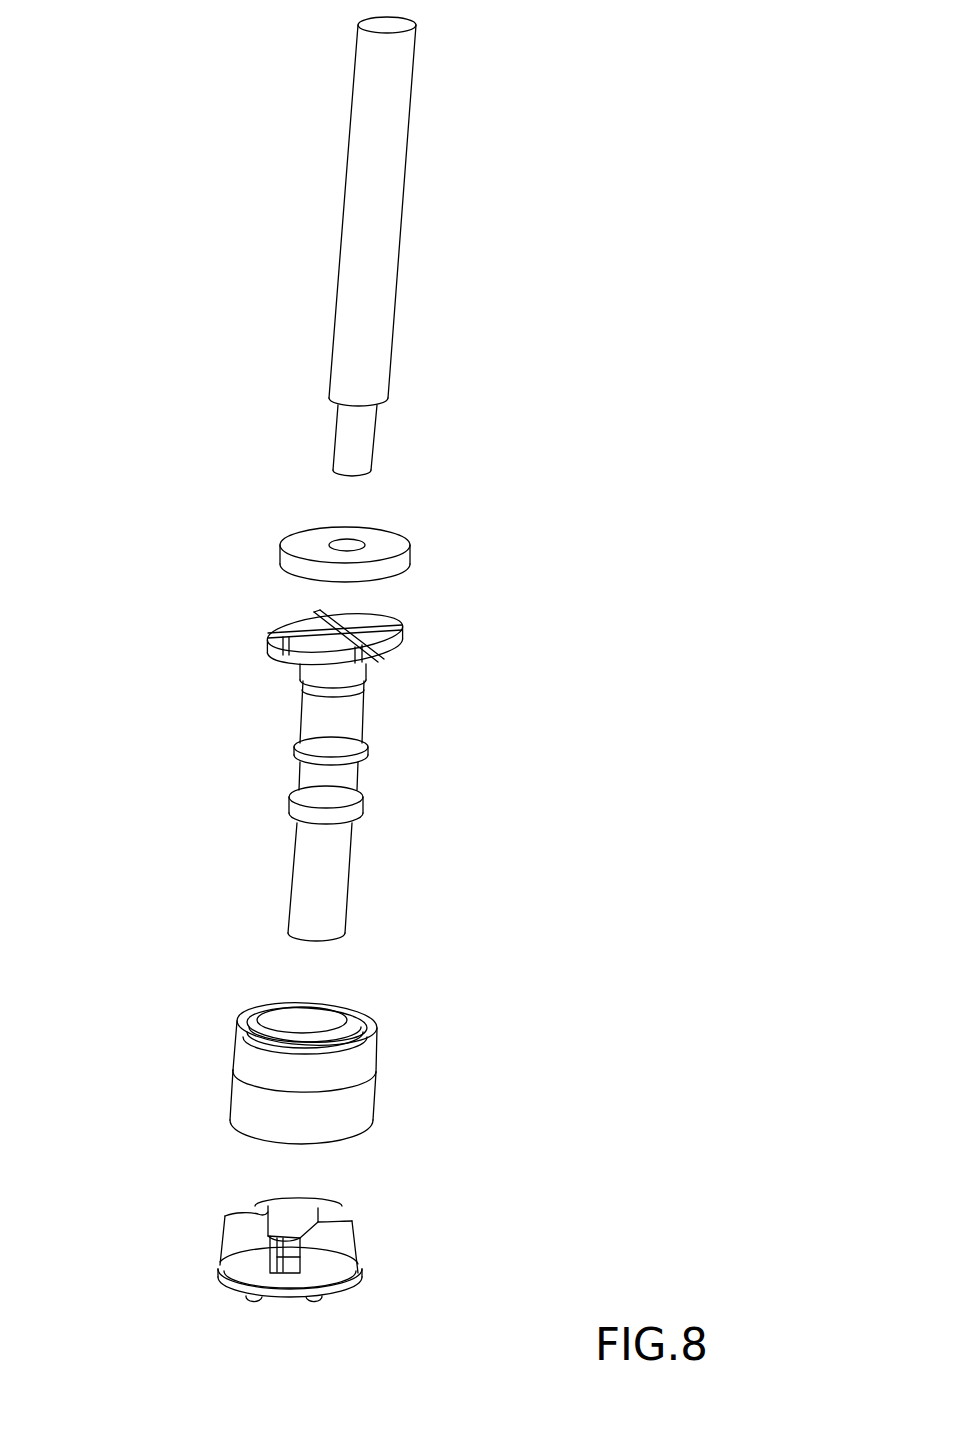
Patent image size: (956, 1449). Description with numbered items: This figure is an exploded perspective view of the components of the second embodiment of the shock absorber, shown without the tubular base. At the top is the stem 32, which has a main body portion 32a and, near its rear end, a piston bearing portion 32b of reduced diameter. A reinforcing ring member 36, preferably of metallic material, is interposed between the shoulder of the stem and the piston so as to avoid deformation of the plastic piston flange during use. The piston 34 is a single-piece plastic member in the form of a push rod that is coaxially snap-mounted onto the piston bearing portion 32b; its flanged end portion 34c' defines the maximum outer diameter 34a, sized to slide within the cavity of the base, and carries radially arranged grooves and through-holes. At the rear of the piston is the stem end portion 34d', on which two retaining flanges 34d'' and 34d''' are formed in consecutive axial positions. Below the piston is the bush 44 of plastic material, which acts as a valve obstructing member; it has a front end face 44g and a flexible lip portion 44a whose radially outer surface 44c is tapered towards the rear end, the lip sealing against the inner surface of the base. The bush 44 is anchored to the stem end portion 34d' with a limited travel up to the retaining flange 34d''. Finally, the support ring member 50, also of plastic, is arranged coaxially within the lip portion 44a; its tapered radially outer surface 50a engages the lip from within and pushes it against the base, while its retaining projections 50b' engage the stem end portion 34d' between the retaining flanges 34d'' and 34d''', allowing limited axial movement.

The stem 32 is at (493, 177).
The main body portion 32a is at (372, 198).
The piston bearing portion 32b is at (355, 431).
The reinforcing ring member 36 is at (397, 540).
The piston 34 is at (278, 742).
The maximum outer diameter 34a is at (405, 635).
The flanged end portion 34c' is at (445, 690).
The retaining flange 34d'' is at (442, 756).
The retaining flange 34d''' is at (444, 805).
The stem end portion 34d' is at (436, 882).
The bush 44 is at (212, 1040).
The front end face 44g is at (378, 1020).
The radially outer surface 44c is at (378, 1115).
The flexible lip portion 44a is at (230, 1120).
The support ring member 50 is at (200, 1255).
The radially outer surface 50a is at (360, 1277).
The retaining projections 50b' is at (284, 1331).